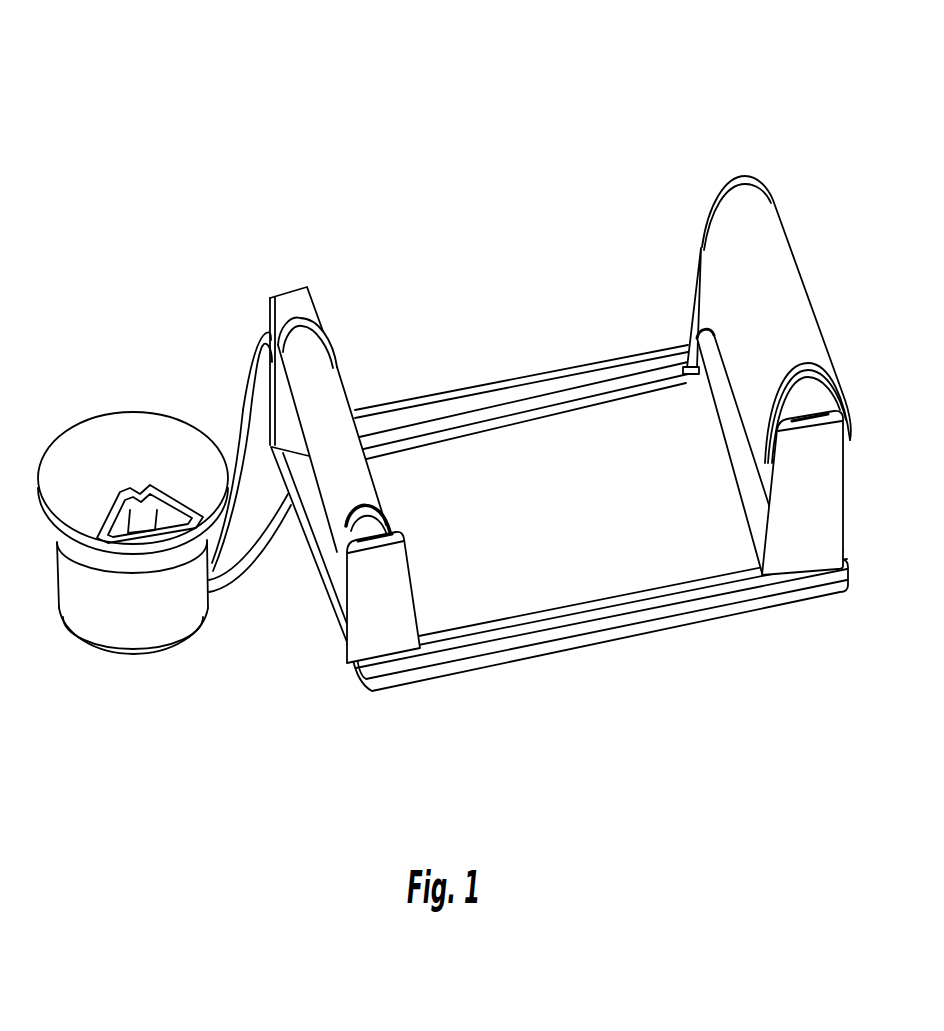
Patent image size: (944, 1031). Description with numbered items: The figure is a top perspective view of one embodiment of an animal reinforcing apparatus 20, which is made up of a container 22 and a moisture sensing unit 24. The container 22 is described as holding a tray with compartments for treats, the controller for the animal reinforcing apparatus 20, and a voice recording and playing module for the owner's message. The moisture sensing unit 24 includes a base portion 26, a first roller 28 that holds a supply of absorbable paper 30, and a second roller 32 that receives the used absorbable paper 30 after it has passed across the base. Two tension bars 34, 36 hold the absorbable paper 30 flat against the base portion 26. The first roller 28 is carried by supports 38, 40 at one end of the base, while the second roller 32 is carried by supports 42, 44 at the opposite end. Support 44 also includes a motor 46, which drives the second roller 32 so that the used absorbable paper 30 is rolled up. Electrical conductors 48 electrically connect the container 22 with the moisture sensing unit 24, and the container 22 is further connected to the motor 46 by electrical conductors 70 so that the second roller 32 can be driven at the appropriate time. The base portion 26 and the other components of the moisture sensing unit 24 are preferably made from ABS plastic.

The animal reinforcing apparatus 20 is at (618, 153).
The container 22 is at (147, 410).
The moisture sensing unit 24 is at (247, 167).
The base portion 26 is at (680, 600).
The first roller 28 is at (360, 521).
The absorbable paper 30 is at (502, 438).
The second roller 32 is at (795, 253).
The tension bar 34 is at (322, 593).
The tension bar 36 is at (745, 495).
The support 38 is at (381, 630).
The support 40 is at (261, 338).
The support 42 is at (810, 505).
The support 44 is at (697, 313).
The motor 46 is at (287, 298).
The electrical conductors 48 is at (245, 568).
The electrical conductors 70 is at (245, 398).